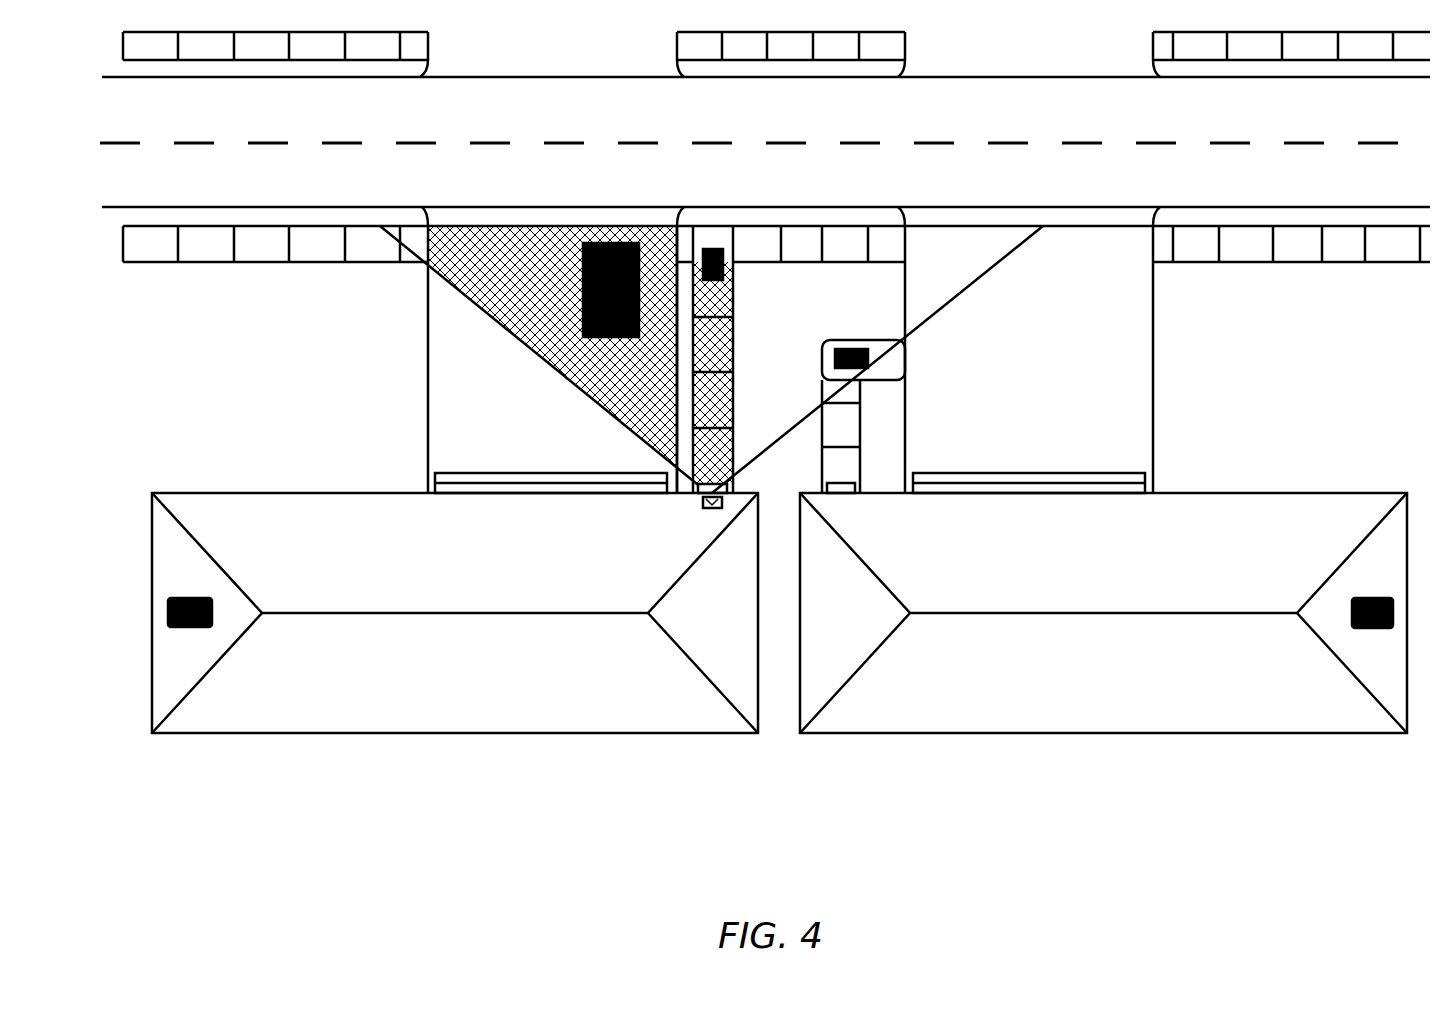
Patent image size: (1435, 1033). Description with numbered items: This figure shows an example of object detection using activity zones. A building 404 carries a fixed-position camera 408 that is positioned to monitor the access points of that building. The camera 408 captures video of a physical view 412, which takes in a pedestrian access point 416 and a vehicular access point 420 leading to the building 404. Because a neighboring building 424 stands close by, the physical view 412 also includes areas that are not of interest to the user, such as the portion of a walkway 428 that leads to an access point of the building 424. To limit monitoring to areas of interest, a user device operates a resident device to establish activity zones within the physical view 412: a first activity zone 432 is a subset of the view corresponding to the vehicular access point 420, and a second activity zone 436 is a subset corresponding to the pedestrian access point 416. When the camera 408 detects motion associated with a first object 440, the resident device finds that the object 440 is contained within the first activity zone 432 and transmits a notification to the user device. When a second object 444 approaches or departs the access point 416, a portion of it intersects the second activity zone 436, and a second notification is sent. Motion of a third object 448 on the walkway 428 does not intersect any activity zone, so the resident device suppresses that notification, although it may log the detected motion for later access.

The building 404 is at (578, 735).
The fixed-position camera 408 is at (703, 505).
The physical view 412 is at (960, 226).
The pedestrian access point 416 is at (727, 483).
The vehicular access point 420 is at (548, 472).
The building 424 is at (848, 737).
The walkway 428 is at (893, 367).
The first activity zone 432 is at (502, 228).
The second activity zone 436 is at (733, 340).
The first object 440 is at (640, 235).
The second object 444 is at (720, 250).
The third object 448 is at (868, 349).